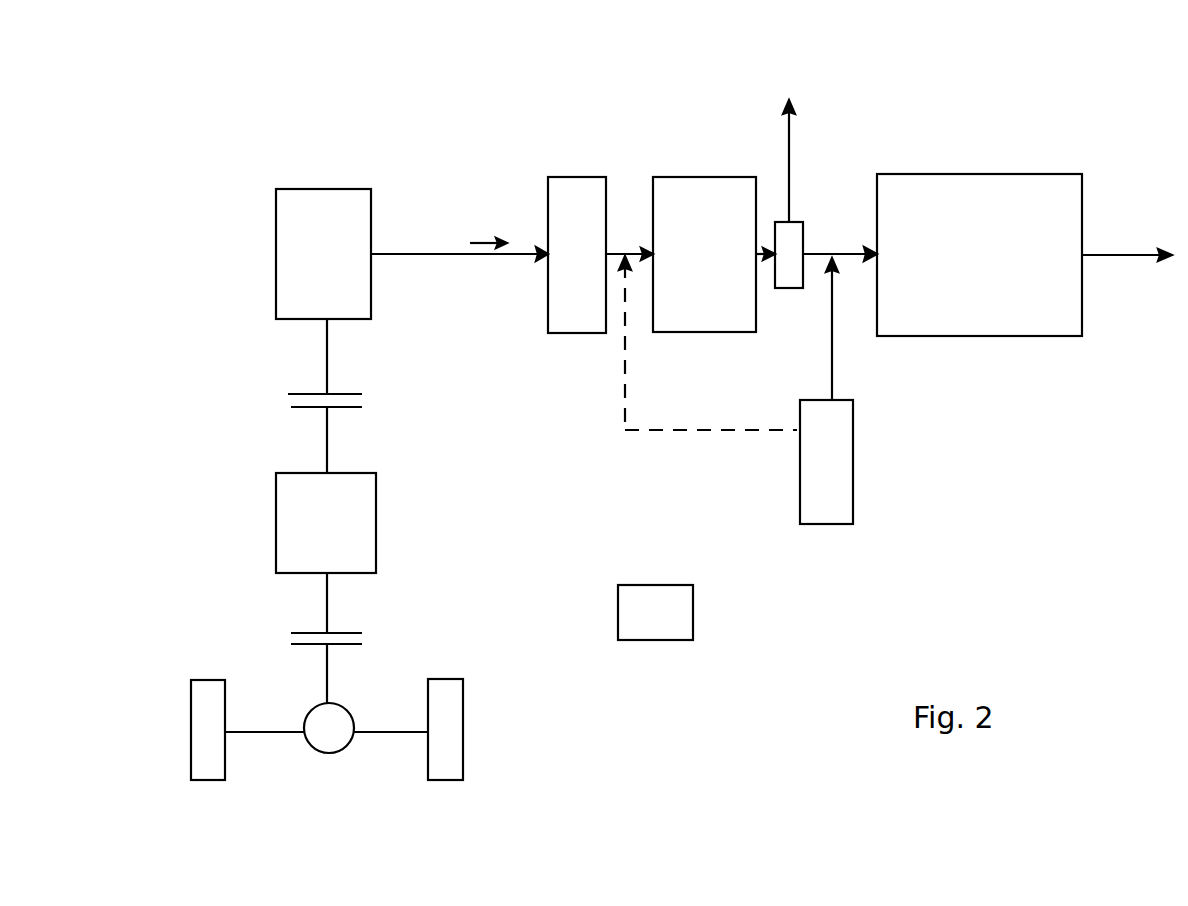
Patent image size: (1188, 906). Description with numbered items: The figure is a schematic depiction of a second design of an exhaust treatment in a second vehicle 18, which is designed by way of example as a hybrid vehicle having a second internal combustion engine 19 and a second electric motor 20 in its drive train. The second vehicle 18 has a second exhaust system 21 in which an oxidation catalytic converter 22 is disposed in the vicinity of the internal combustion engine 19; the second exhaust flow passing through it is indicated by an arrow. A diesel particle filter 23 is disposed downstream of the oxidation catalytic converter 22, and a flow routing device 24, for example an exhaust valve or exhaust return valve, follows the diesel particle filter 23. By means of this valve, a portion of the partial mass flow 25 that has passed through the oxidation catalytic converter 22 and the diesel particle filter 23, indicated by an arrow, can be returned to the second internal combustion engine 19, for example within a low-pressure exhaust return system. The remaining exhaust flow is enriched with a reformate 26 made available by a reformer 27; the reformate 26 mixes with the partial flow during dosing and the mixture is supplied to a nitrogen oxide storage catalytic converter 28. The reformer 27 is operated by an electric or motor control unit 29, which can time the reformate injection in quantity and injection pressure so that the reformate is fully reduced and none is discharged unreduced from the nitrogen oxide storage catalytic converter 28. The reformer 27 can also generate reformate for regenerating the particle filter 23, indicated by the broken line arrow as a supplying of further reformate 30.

The second vehicle 18 is at (1000, 541).
The second internal combustion engine 19 is at (371, 205).
The second electric motor 20 is at (376, 535).
The second exhaust system 21 is at (573, 124).
The oxidation catalytic converter 22 is at (600, 333).
The diesel particle filter 23 is at (690, 177).
The flow routing device 24 is at (790, 288).
The partial mass flow 25 is at (807, 130).
The reformate 26 is at (843, 300).
The reformer 27 is at (853, 450).
The nitrogen oxide storage catalytic converter 28 is at (960, 174).
The electric or motor control unit 29 is at (693, 610).
The further reformate 30 is at (688, 432).